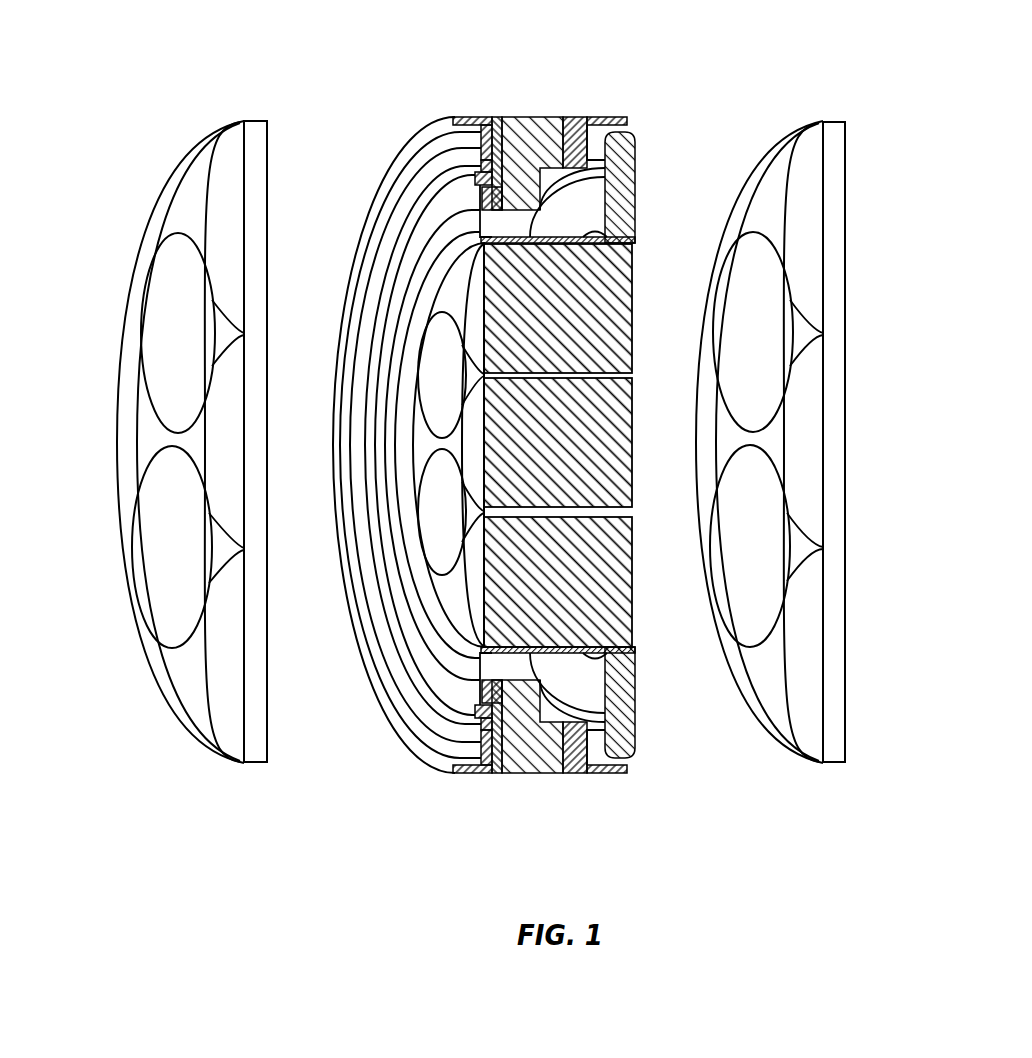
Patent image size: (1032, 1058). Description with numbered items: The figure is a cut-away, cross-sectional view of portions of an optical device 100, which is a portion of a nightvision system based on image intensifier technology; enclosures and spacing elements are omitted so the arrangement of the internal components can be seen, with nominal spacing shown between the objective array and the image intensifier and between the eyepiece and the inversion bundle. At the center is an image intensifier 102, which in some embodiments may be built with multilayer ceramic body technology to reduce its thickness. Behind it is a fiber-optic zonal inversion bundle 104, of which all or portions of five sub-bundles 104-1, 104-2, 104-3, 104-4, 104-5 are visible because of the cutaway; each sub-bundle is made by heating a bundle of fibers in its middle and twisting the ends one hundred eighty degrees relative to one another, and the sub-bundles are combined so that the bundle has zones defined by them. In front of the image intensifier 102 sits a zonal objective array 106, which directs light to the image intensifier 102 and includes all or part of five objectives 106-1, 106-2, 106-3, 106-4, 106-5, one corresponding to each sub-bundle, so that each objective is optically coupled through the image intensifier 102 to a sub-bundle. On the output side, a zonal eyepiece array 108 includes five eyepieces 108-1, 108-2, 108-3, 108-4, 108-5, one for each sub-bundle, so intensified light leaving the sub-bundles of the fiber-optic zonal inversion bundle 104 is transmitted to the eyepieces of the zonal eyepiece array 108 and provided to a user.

The optical device 100 is at (554, 438).
The image intensifier 102 is at (668, 126).
The fiber-optic zonal inversion bundle 104 is at (664, 286).
The sub-bundle 104-1 is at (451, 375).
The sub-bundle 104-2 is at (451, 512).
The sub-bundle 104-3 is at (558, 308).
The sub-bundle 104-4 is at (558, 442).
The sub-bundle 104-5 is at (558, 582).
The zonal objective array 106 is at (318, 116).
The objective 106-1 is at (192, 333).
The objective 106-2 is at (188, 547).
The objective 106-3 is at (225, 209).
The objective 106-4 is at (225, 433).
The objective 106-5 is at (225, 691).
The zonal eyepiece array 108 is at (958, 116).
The eyepiece 108-1 is at (768, 332).
The eyepiece 108-2 is at (766, 546).
The eyepiece 108-3 is at (802, 209).
The eyepiece 108-4 is at (802, 434).
The eyepiece 108-5 is at (802, 691).